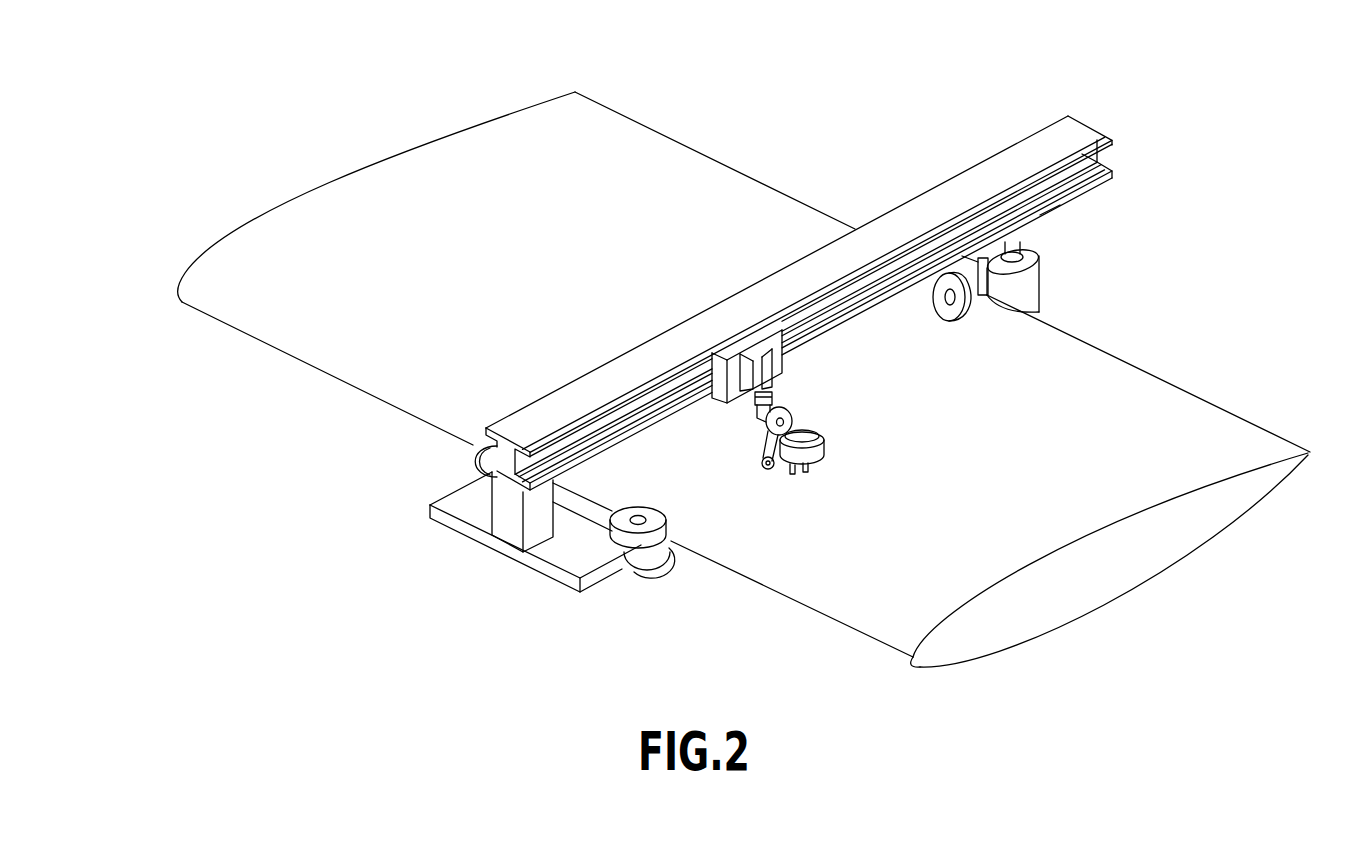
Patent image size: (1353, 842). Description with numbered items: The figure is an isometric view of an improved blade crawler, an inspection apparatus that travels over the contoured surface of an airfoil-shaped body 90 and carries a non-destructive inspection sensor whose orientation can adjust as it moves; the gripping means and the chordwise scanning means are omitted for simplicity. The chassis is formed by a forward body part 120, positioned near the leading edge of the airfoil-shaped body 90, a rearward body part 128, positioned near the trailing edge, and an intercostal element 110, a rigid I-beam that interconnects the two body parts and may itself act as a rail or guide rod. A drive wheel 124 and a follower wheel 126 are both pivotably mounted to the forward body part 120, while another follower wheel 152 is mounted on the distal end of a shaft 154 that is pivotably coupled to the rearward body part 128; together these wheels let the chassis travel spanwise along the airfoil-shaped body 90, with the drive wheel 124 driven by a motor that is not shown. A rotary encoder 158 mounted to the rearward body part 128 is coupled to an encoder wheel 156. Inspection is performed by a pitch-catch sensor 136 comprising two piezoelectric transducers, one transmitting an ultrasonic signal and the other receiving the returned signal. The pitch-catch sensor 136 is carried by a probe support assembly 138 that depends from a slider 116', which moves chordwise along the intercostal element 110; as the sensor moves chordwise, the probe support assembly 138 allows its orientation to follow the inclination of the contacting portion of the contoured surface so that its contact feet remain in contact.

The airfoil-shaped body 90 is at (407, 152).
The intercostal element 110 is at (997, 157).
The slider 116' is at (709, 346).
The forward body part 120 is at (500, 553).
The drive wheel 124 is at (472, 455).
The follower wheel 126 is at (658, 564).
The rearward body part 128 is at (1048, 216).
The pitch-catch sensor 136 is at (806, 428).
The probe support assembly 138 is at (793, 397).
The follower wheel 152 is at (1040, 288).
The shaft 154 is at (1021, 250).
The encoder wheel 156 is at (961, 321).
The rotary encoder 158 is at (1043, 312).